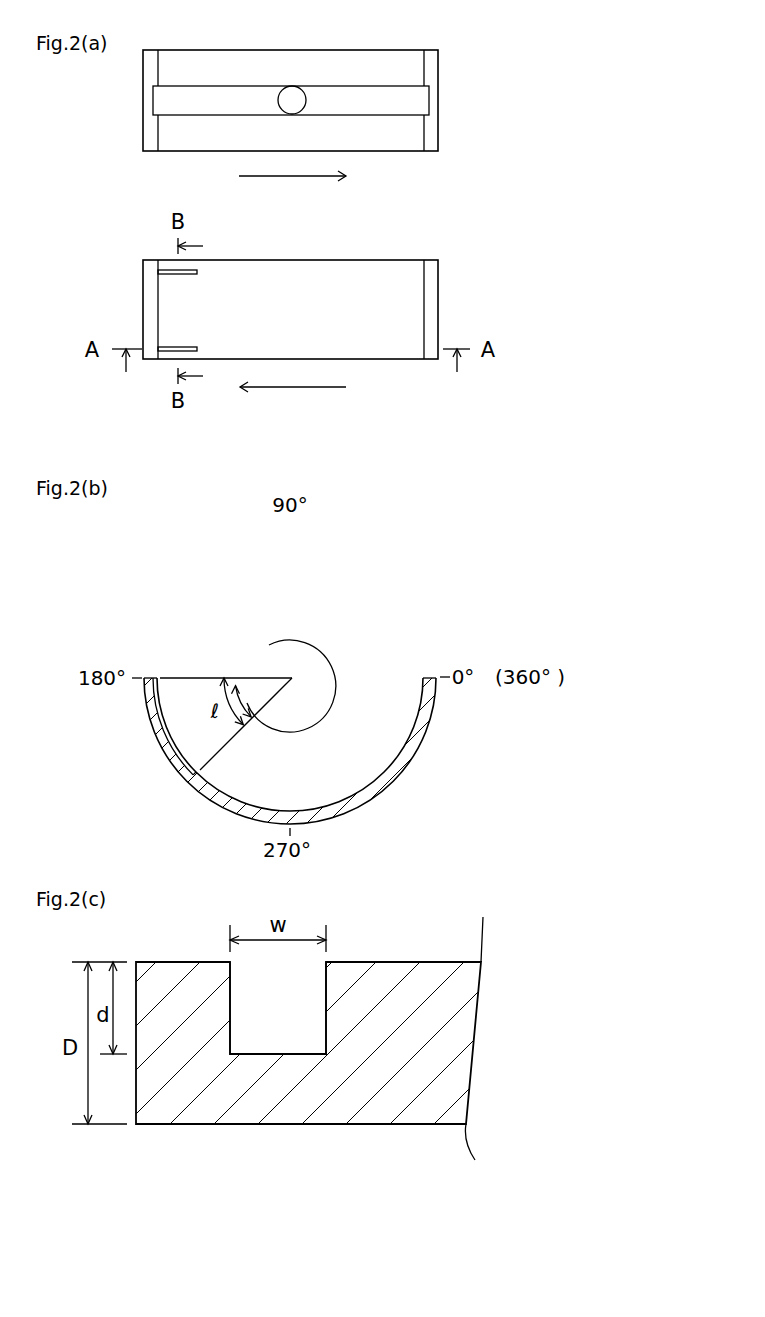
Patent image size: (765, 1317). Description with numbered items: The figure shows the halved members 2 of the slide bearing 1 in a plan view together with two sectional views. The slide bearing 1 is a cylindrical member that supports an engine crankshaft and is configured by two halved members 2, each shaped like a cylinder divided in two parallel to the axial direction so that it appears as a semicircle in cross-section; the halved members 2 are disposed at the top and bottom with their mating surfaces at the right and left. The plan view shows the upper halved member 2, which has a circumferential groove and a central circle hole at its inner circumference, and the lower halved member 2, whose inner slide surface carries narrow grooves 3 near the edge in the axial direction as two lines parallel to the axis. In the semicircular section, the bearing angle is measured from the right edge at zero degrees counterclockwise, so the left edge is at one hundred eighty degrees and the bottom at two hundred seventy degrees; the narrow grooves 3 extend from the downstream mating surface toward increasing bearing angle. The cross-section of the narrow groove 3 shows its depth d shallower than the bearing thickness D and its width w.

In FIG. 2A, the slide bearing 1 is at (287, 38).
In FIG. 2A, the halved member 2 is at (433, 88).
In FIG. 2B, the halved member 2 is at (428, 715).
In FIG. 2C, the halved member 2 is at (170, 975).
In FIG. 2A, the narrow groove 3 is at (172, 268).
In FIG. 2B, the narrow groove 3 is at (163, 740).
In FIG. 2C, the narrow groove 3 is at (326, 1010).